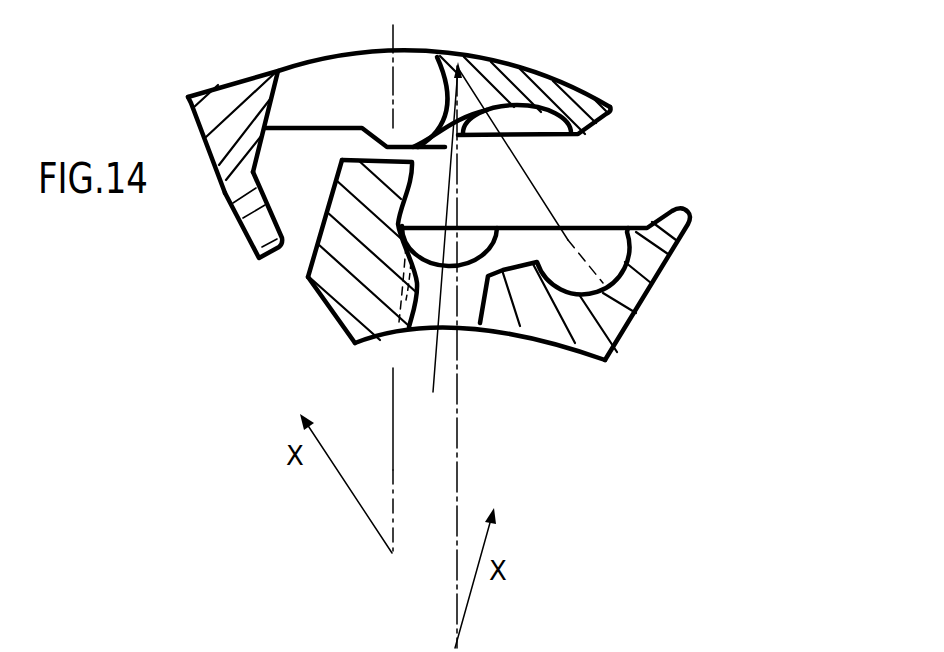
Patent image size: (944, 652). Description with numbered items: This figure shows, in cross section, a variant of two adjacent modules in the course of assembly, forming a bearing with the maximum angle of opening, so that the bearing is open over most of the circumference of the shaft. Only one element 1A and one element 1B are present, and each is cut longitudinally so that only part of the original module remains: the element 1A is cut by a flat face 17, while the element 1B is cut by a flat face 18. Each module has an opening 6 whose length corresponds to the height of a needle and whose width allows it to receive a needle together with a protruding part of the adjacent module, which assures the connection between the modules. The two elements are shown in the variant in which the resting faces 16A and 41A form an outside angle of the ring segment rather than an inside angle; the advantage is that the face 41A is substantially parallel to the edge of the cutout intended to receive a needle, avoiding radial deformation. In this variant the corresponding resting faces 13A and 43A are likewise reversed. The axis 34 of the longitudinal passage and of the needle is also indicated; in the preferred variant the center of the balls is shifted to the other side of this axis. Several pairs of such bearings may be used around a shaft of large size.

The module 1A is at (567, 72).
The module 1B is at (642, 216).
The opening 6 is at (340, 72).
The flat face 17 is at (227, 193).
The resting face 13A is at (275, 216).
The resting face 43A is at (259, 141).
The resting face 41A is at (320, 243).
The resting face 16A is at (337, 314).
The flat face 18 is at (647, 304).
The axis 34 is at (458, 432).